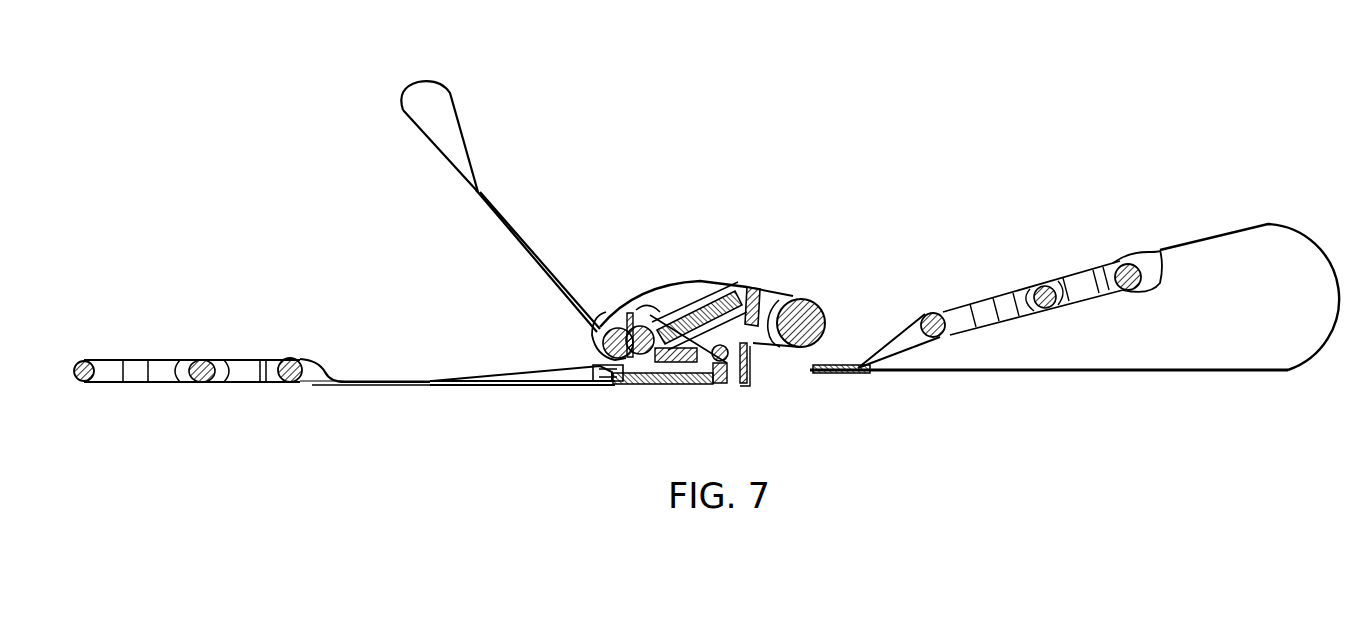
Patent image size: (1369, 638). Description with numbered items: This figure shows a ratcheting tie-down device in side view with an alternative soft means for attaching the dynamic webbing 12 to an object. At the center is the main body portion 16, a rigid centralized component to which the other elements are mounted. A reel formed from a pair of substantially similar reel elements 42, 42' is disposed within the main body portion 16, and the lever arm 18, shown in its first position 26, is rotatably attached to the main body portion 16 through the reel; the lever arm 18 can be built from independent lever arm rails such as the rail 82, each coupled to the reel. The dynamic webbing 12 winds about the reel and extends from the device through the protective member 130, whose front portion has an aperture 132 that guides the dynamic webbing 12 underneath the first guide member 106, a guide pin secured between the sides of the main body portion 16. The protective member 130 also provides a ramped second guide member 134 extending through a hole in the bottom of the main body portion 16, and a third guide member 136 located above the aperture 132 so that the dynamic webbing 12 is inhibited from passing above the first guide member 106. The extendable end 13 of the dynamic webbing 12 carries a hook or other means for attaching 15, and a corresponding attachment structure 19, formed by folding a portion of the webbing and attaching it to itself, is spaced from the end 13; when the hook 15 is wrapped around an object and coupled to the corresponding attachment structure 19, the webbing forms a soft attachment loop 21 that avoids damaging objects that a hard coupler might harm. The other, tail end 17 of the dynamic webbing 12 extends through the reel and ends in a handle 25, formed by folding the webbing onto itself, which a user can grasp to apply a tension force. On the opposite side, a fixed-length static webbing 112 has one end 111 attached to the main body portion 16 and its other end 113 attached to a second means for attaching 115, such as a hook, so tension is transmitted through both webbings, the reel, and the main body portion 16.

The dynamic webbing 12 is at (1131, 386).
The extendable end of the dynamic webbing 13 is at (977, 372).
The means for attaching 15 is at (1038, 292).
The main body portion 16 is at (580, 348).
The other end of the dynamic webbing 17 is at (502, 240).
The lever arm 18 is at (826, 278).
The corresponding attachment structure 19 is at (890, 344).
The soft attachment loop 21 is at (1291, 326).
The handle 25 is at (414, 86).
The first position 26 is at (786, 224).
The reel element 42 is at (609, 317).
The reel element 42' is at (648, 305).
The lever arm rail 82 is at (698, 290).
The first guide member 106 is at (740, 366).
The one end of the static webbing 111 is at (452, 386).
The static webbing 112 is at (398, 380).
The other end of the static webbing 113 is at (349, 385).
The second means for attaching 115 is at (86, 382).
The protective member 130 is at (616, 386).
The aperture 132 is at (772, 367).
The second guide member 134 is at (709, 385).
The third guide member 136 is at (740, 330).